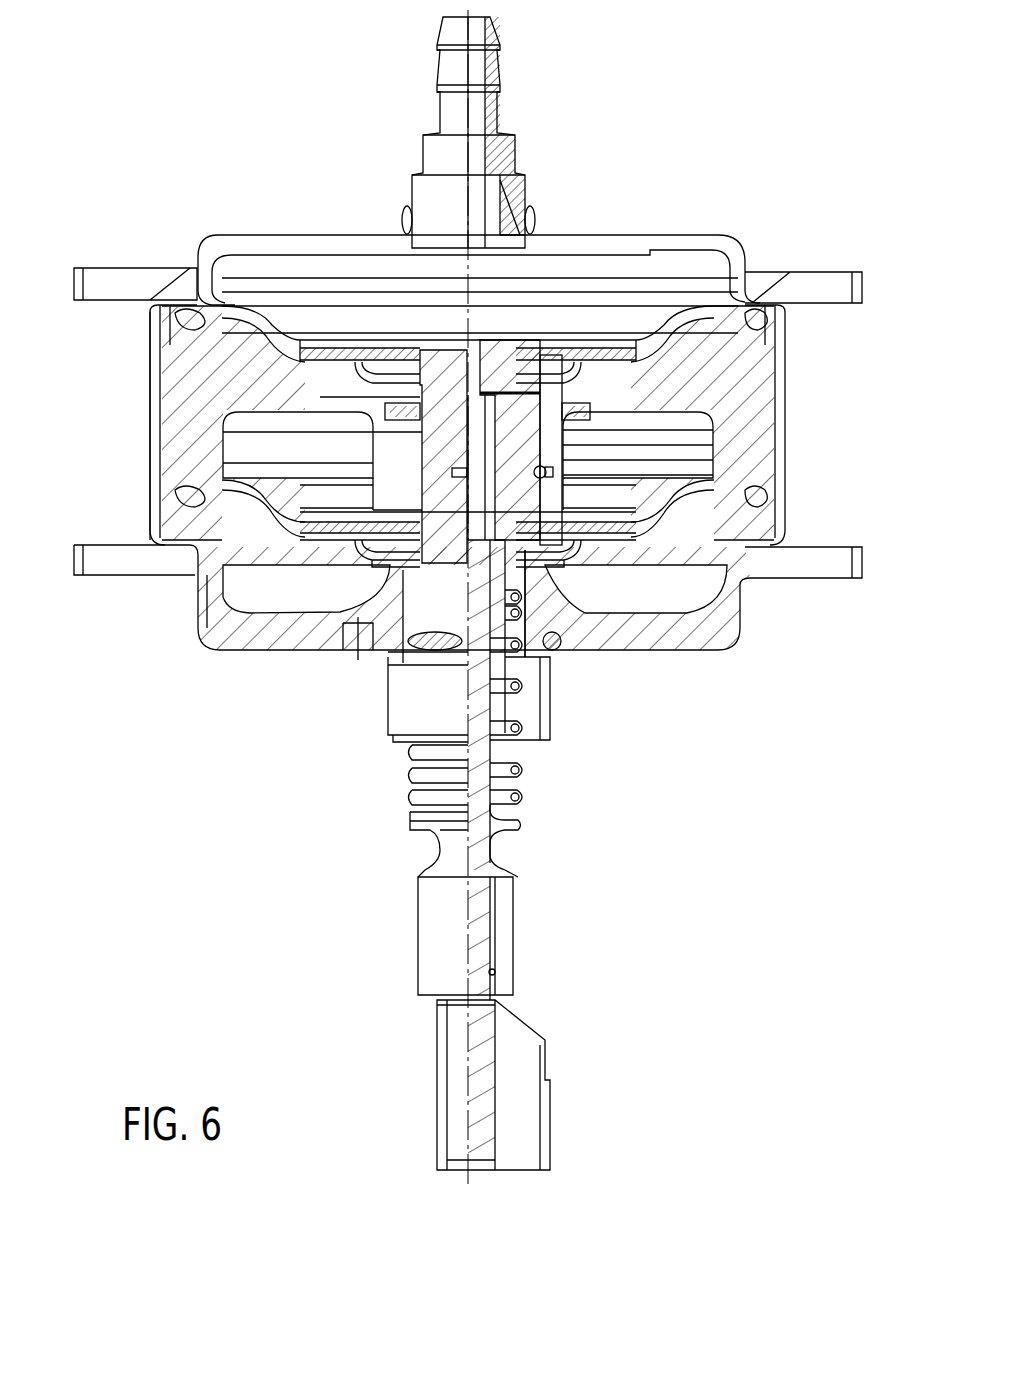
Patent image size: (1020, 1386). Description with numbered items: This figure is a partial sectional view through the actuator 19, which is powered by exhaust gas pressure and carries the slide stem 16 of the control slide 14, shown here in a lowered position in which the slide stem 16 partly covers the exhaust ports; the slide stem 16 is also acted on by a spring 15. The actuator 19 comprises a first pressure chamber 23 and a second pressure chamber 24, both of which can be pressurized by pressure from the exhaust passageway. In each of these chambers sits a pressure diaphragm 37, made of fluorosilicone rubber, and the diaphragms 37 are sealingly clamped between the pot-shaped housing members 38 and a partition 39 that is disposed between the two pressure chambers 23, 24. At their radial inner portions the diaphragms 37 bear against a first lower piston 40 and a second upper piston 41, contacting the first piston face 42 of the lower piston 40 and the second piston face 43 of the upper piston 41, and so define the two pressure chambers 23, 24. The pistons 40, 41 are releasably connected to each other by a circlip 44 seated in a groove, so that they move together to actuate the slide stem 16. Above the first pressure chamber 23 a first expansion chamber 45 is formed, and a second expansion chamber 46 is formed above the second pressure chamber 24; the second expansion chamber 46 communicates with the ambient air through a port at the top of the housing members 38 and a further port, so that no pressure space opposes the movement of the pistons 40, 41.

The control slide 14 is at (452, 1100).
The spring 15 is at (520, 767).
The slide stem 16 is at (485, 845).
The actuator 19 is at (103, 400).
The first pressure chamber 23 is at (252, 587).
The second pressure chamber 24 is at (242, 358).
The pressure diaphragm 37 is at (680, 353).
The pot-shaped housing member 38 is at (708, 240).
The partition 39 is at (767, 390).
The first lower piston 40 is at (458, 603).
The second upper piston 41 is at (527, 357).
The first piston face 42 is at (643, 515).
The second piston face 43 is at (613, 343).
The circlip 44 is at (600, 450).
The first expansion chamber 45 is at (293, 487).
The second expansion chamber 46 is at (287, 267).